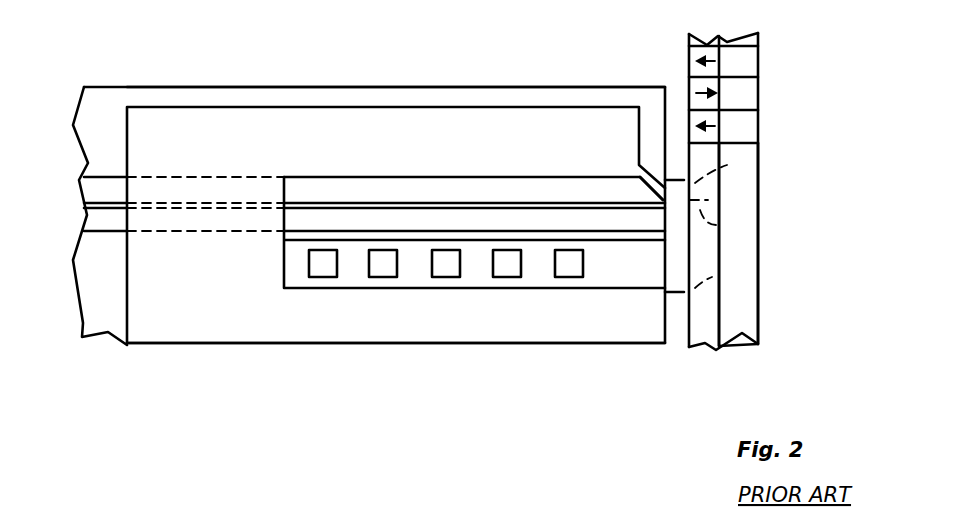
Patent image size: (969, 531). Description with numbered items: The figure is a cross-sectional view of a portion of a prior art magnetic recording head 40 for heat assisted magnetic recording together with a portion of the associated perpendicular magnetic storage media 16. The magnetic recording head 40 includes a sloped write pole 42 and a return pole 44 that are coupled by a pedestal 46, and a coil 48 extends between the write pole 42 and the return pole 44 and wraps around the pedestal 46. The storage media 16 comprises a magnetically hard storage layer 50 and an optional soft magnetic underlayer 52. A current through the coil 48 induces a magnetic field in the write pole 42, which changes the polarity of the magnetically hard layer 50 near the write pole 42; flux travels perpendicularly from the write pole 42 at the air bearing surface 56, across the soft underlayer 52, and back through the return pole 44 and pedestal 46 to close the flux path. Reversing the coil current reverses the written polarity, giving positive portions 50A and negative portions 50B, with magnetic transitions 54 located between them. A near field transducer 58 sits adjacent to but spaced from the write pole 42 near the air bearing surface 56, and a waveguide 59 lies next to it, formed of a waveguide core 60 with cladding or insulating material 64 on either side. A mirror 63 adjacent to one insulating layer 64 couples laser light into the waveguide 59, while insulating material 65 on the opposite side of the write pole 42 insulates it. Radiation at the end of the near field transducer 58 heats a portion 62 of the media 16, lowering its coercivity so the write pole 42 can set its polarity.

The perpendicular magnetic storage media 16 is at (779, 58).
The magnetic recording head 40 is at (346, 72).
The write pole 42 is at (475, 125).
The return pole 44 is at (512, 337).
The pedestal 46 is at (140, 272).
The coil 48 is at (503, 278).
The magnetically hard storage layer 50 is at (704, 353).
The positive portions 50A is at (713, 137).
The negative portions 50B is at (716, 100).
The soft magnetic underlayer 52 is at (745, 352).
The magnetic transition 54 is at (738, 163).
The air bearing surface 56 is at (676, 178).
The near field transducer 58 is at (652, 196).
The waveguide 59 is at (75, 177).
The waveguide core 60 is at (334, 204).
The portion of magnetic media 62 is at (727, 222).
The mirror 63 is at (308, 240).
The insulating material 64 is at (387, 178).
The insulating material 65 is at (259, 98).